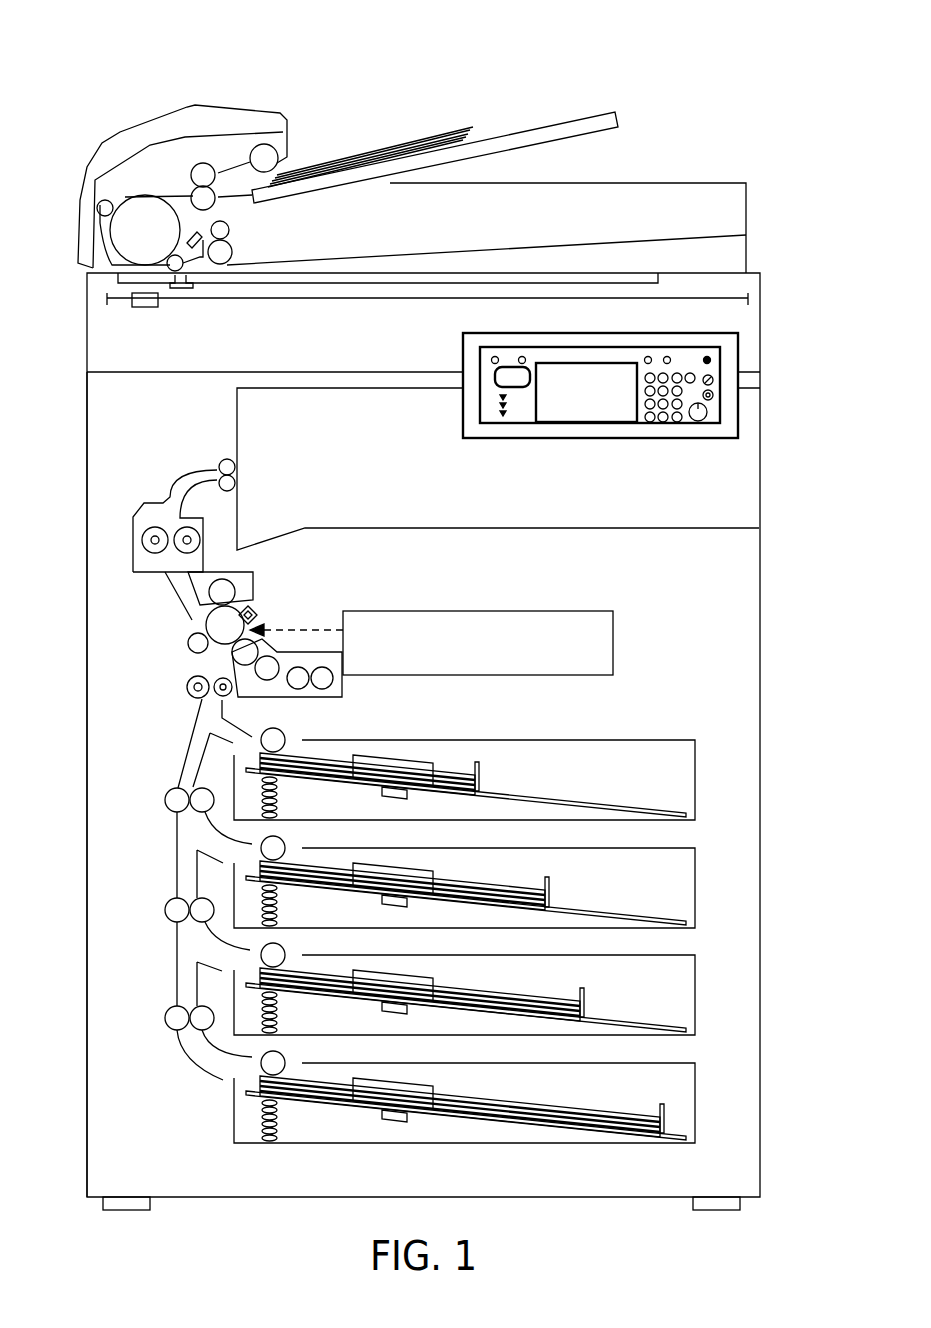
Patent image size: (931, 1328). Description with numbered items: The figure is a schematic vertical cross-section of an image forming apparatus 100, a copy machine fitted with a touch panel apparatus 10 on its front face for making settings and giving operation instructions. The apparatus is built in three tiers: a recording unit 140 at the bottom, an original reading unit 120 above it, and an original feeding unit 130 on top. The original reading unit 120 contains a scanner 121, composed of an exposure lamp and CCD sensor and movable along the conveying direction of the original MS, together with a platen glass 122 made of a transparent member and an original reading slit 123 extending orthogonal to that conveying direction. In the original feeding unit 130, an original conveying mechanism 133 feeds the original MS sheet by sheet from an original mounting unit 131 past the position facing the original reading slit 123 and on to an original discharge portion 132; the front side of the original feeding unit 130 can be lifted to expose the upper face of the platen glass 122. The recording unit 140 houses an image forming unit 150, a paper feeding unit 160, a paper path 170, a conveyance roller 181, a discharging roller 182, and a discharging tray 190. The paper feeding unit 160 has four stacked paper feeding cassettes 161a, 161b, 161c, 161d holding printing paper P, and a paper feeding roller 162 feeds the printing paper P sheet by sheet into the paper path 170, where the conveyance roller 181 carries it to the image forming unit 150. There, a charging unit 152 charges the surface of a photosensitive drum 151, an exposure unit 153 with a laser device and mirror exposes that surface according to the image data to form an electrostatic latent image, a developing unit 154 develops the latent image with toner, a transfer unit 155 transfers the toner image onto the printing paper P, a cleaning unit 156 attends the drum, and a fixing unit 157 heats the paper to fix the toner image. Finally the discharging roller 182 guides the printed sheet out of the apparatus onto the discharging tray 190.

The image forming apparatus 100 is at (87, 90).
The touch panel apparatus 10 is at (742, 365).
The original reading unit 120 is at (765, 313).
The scanner 121 is at (147, 307).
The platen glass 122 is at (583, 279).
The original reading slit 123 is at (153, 280).
The original feeding unit 130 is at (312, 117).
The original mounting unit 131 is at (585, 118).
The original discharge portion 132 is at (500, 248).
The original conveying mechanism 133 is at (217, 107).
The original MS is at (430, 137).
The recording unit 140 is at (765, 602).
The image forming unit 150 is at (340, 590).
The photosensitive drum 151 is at (216, 622).
The charging unit 152 is at (255, 606).
The exposure unit 153 is at (573, 652).
The developing unit 154 is at (343, 688).
The transfer unit 155 is at (190, 643).
The cleaning unit 156 is at (245, 578).
The fixing unit 157 is at (205, 537).
The paper feeding unit 160 is at (730, 758).
The paper feeding cassette 161a is at (700, 785).
The paper feeding cassette 161b is at (700, 892).
The paper feeding cassette 161c is at (700, 1000).
The paper feeding cassette 161d is at (700, 1108).
The paper feeding roller 162 is at (273, 740).
The printing paper P is at (440, 770).
The paper path 170 is at (183, 733).
The conveyance roller 181 is at (188, 687).
The discharging roller 182 is at (232, 460).
The discharging tray 190 is at (460, 526).